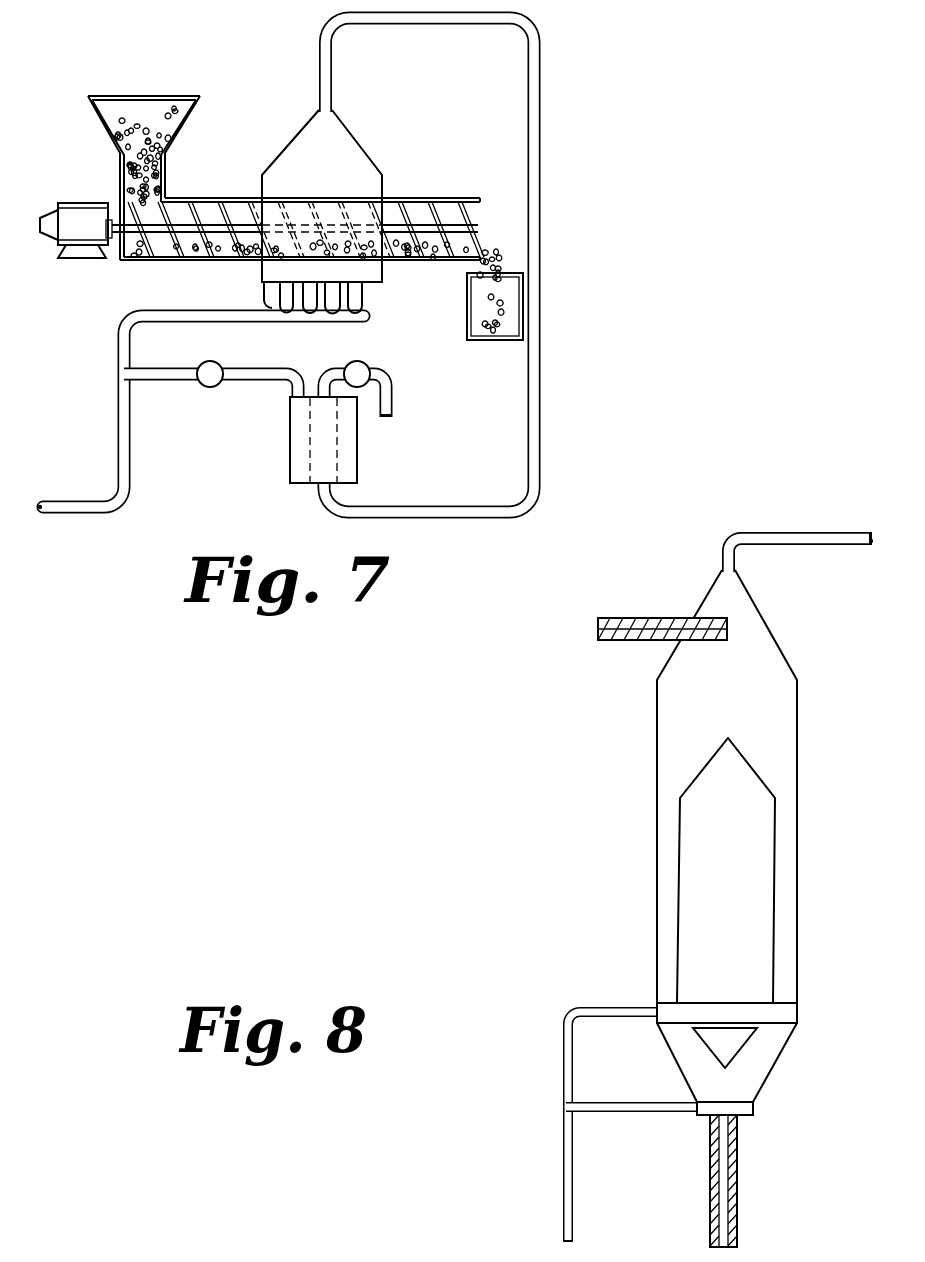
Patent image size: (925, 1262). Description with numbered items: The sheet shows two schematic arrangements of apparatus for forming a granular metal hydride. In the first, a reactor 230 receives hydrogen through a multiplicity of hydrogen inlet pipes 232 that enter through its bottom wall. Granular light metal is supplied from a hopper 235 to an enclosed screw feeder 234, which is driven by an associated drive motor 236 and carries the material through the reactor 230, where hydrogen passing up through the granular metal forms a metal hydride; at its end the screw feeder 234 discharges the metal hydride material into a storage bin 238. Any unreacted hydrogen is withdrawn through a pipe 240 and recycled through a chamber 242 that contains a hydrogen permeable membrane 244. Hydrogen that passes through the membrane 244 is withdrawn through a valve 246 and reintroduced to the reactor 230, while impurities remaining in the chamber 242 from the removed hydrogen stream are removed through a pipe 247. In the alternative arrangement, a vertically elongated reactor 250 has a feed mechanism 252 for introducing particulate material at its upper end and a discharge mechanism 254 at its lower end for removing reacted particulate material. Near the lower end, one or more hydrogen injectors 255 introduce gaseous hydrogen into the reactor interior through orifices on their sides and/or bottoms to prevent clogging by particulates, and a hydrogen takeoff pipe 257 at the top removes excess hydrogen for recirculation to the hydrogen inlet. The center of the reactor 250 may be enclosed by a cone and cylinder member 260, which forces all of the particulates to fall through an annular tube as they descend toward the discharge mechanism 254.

In FIG. 7, the reactor 230 is at (361, 147).
In FIG. 7, the hydrogen inlet pipes 232 is at (264, 298).
In FIG. 7, the screw feeder 234 is at (200, 197).
In FIG. 7, the hopper 235 is at (196, 110).
In FIG. 7, the drive motor 236 is at (72, 205).
In FIG. 7, the storage bin 238 is at (466, 316).
In FIG. 7, the pipe 240 is at (406, 25).
In FIG. 7, the chamber 242 is at (290, 481).
In FIG. 7, the hydrogen permeable membrane 244 is at (290, 436).
In FIG. 7, the valve 246 is at (208, 389).
In FIG. 7, the pipe 247 is at (393, 398).
In FIG. 8, the vertically elongated reactor 250 is at (657, 835).
In FIG. 8, the feed mechanism 252 is at (634, 618).
In FIG. 8, the discharge mechanism 254 is at (710, 1170).
In FIG. 8, the hydrogen injectors 255 is at (798, 1006).
In FIG. 8, the hydrogen takeoff pipe 257 is at (777, 534).
In FIG. 8, the cone and cylinder member 260 is at (712, 757).